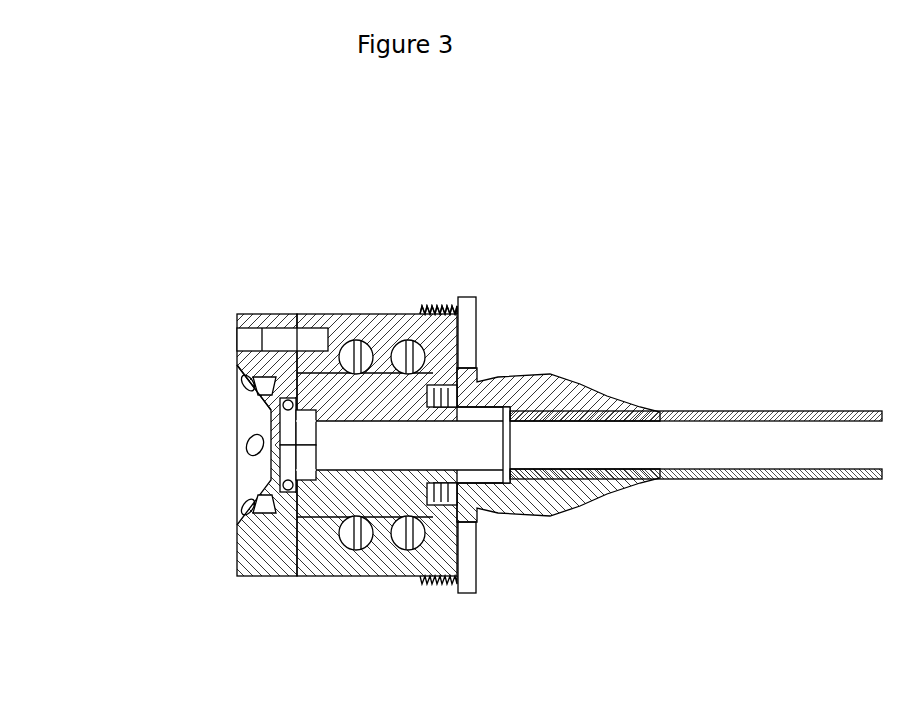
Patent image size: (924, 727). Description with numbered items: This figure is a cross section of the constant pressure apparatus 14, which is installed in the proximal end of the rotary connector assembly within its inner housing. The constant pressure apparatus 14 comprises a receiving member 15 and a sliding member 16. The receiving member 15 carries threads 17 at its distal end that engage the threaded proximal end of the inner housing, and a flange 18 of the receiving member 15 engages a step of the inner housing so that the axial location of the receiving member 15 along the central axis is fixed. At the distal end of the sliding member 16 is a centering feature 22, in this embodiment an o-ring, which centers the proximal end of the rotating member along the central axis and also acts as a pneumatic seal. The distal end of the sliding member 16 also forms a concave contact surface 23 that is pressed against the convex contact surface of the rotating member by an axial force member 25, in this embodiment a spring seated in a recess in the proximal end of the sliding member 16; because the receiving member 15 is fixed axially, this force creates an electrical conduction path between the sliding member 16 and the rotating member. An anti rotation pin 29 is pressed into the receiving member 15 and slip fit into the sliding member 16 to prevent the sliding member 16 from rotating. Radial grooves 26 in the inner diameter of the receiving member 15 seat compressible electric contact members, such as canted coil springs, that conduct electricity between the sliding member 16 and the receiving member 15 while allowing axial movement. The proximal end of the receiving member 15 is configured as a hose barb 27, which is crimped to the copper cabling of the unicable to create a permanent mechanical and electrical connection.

The constant pressure apparatus 14 is at (395, 298).
The receiving member 15 is at (597, 390).
The sliding member 16 is at (238, 556).
The threads 17 is at (437, 298).
The flange 18 is at (475, 288).
The centering feature 22 is at (286, 510).
The concave contact surface 23 is at (238, 372).
The axial force member 25 is at (485, 372).
The radial grooves 26 is at (405, 556).
The hose barb 27 is at (823, 487).
The anti rotation pin 29 is at (277, 340).